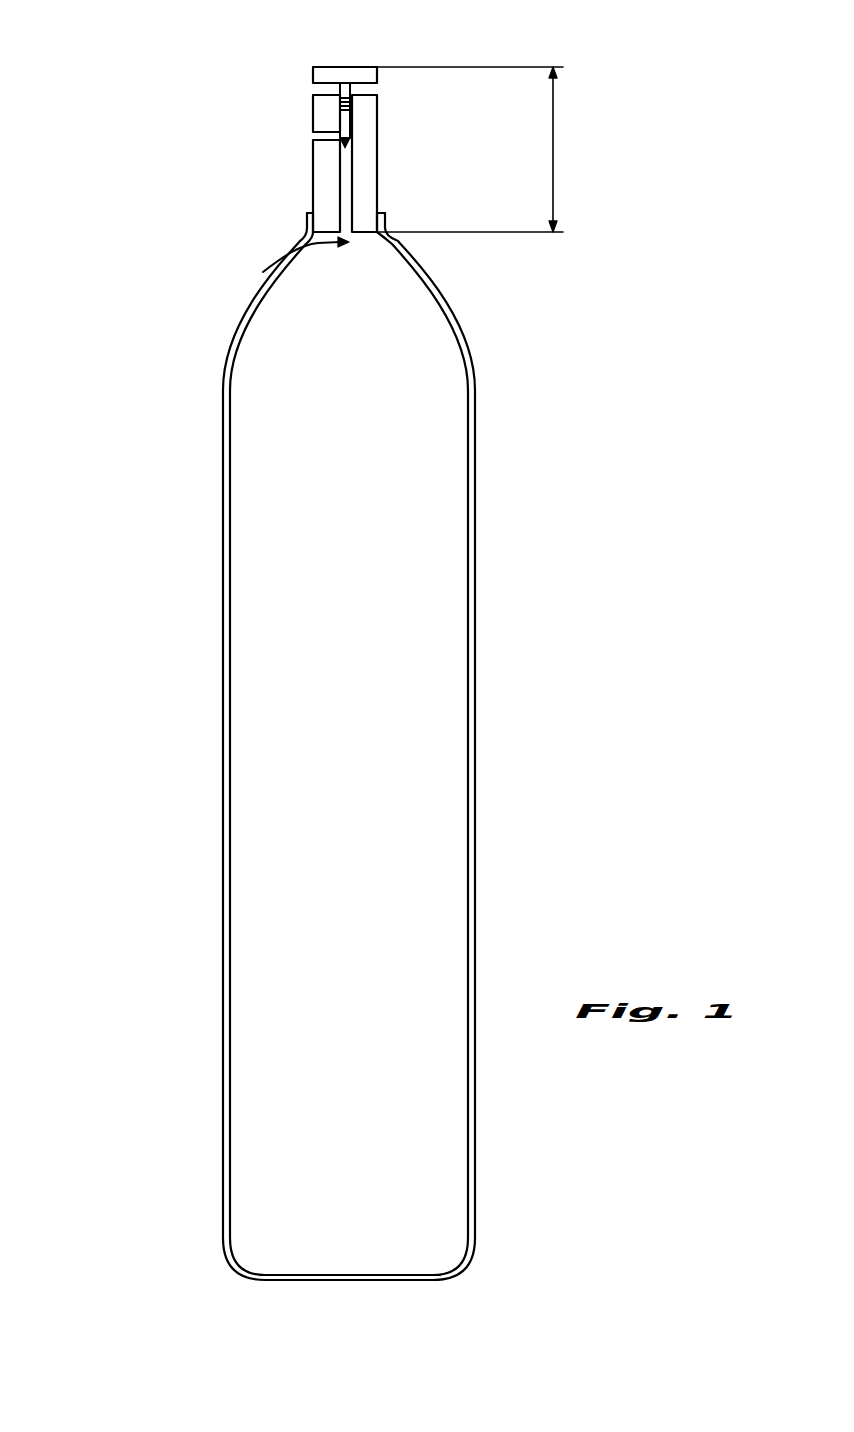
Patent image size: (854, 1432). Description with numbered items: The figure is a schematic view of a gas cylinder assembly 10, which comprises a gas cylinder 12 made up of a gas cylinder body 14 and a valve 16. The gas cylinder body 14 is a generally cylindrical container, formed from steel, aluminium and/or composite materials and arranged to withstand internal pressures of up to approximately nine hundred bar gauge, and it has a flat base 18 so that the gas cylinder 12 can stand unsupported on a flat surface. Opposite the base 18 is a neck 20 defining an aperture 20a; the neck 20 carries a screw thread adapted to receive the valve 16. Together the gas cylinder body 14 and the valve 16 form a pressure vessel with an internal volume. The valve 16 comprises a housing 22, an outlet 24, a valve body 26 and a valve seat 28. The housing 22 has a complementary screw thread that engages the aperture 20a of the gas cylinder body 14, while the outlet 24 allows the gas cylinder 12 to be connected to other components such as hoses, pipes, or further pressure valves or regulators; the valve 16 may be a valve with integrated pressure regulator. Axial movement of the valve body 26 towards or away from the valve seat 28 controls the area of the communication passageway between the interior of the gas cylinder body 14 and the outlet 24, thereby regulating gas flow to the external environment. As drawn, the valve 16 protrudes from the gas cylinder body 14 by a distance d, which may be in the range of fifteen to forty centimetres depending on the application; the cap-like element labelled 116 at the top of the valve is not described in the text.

The gas cylinder assembly 10 is at (372, 641).
The gas cylinder 12 is at (441, 744).
The gas cylinder body 14 is at (470, 650).
The valve 16 is at (256, 117).
The flat base 18 is at (300, 1277).
The neck 20 is at (308, 223).
The aperture 20a is at (263, 272).
The housing 22 is at (317, 113).
The outlet 24 is at (327, 135).
The valve body 26 is at (352, 112).
The valve seat 28 is at (352, 138).
The cap 116 is at (318, 67).